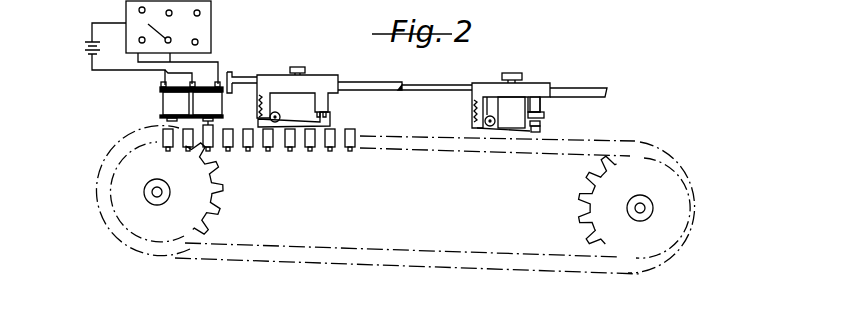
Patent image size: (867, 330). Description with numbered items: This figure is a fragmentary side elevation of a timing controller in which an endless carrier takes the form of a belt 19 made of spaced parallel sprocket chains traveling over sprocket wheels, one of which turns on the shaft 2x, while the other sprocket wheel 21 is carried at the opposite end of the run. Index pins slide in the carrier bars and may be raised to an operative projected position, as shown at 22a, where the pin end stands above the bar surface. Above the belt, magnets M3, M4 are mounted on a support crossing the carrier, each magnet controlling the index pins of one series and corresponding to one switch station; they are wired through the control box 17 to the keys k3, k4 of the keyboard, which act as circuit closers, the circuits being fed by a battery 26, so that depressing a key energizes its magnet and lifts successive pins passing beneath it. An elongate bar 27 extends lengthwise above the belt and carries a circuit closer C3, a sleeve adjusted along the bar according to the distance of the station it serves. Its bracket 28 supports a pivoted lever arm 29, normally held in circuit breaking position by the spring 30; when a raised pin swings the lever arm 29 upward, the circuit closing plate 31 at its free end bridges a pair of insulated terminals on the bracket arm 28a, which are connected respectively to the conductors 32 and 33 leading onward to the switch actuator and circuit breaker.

The control box 17 is at (193, 23).
The key k3 is at (138, 41).
The key k4 is at (153, 28).
The battery 26 is at (85, 43).
The magnet M3 is at (172, 106).
The magnet M4 is at (213, 108).
The index pin in projected position 22a is at (214, 133).
The sprocket wheel 21 is at (152, 192).
The shaft 2x is at (640, 208).
The belt 19 is at (293, 252).
The bracket 28 is at (490, 100).
The spring 30 is at (472, 107).
The lever arm 29 is at (505, 128).
The circuit closer C3 is at (530, 88).
The bracket arm 28a is at (540, 100).
The conductor 33 is at (545, 118).
The conductor 32 is at (535, 126).
The circuit closing plate 31 is at (540, 132).
The bar 27 is at (607, 88).